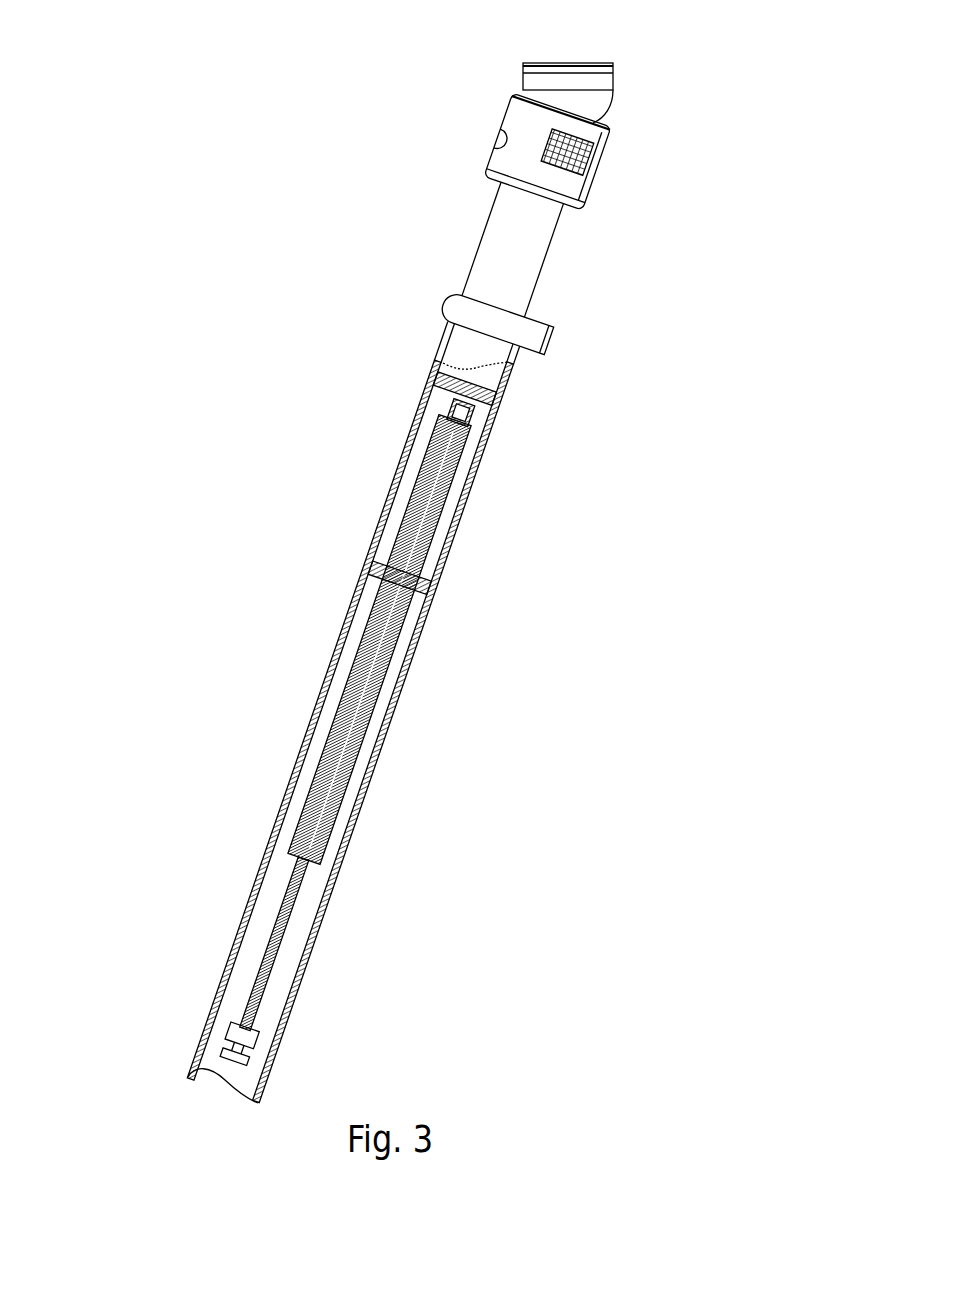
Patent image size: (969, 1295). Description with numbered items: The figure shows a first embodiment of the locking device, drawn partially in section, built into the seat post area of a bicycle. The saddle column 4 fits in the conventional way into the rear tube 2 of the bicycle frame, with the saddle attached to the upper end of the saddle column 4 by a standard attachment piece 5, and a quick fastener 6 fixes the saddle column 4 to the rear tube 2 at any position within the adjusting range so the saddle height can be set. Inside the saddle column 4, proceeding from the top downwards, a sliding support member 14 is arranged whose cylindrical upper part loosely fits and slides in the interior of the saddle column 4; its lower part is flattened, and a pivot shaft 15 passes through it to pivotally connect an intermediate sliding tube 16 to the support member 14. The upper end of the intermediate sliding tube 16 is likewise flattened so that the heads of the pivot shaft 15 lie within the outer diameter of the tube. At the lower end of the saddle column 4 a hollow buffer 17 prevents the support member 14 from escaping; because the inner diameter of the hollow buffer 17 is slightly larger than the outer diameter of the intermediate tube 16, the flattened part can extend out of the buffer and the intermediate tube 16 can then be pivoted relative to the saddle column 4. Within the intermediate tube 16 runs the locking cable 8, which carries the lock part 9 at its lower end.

The rear tube 2 is at (300, 757).
The saddle column 4 is at (532, 260).
The attachment piece 5 is at (523, 63).
The quick fastener 6 is at (547, 350).
The locking cable 8 is at (273, 962).
The lock part 9 is at (253, 1037).
The sliding support member 14 is at (473, 403).
The pivot shaft 15 is at (450, 398).
The intermediate sliding tube 16 is at (390, 653).
The hollow buffer 17 is at (442, 573).